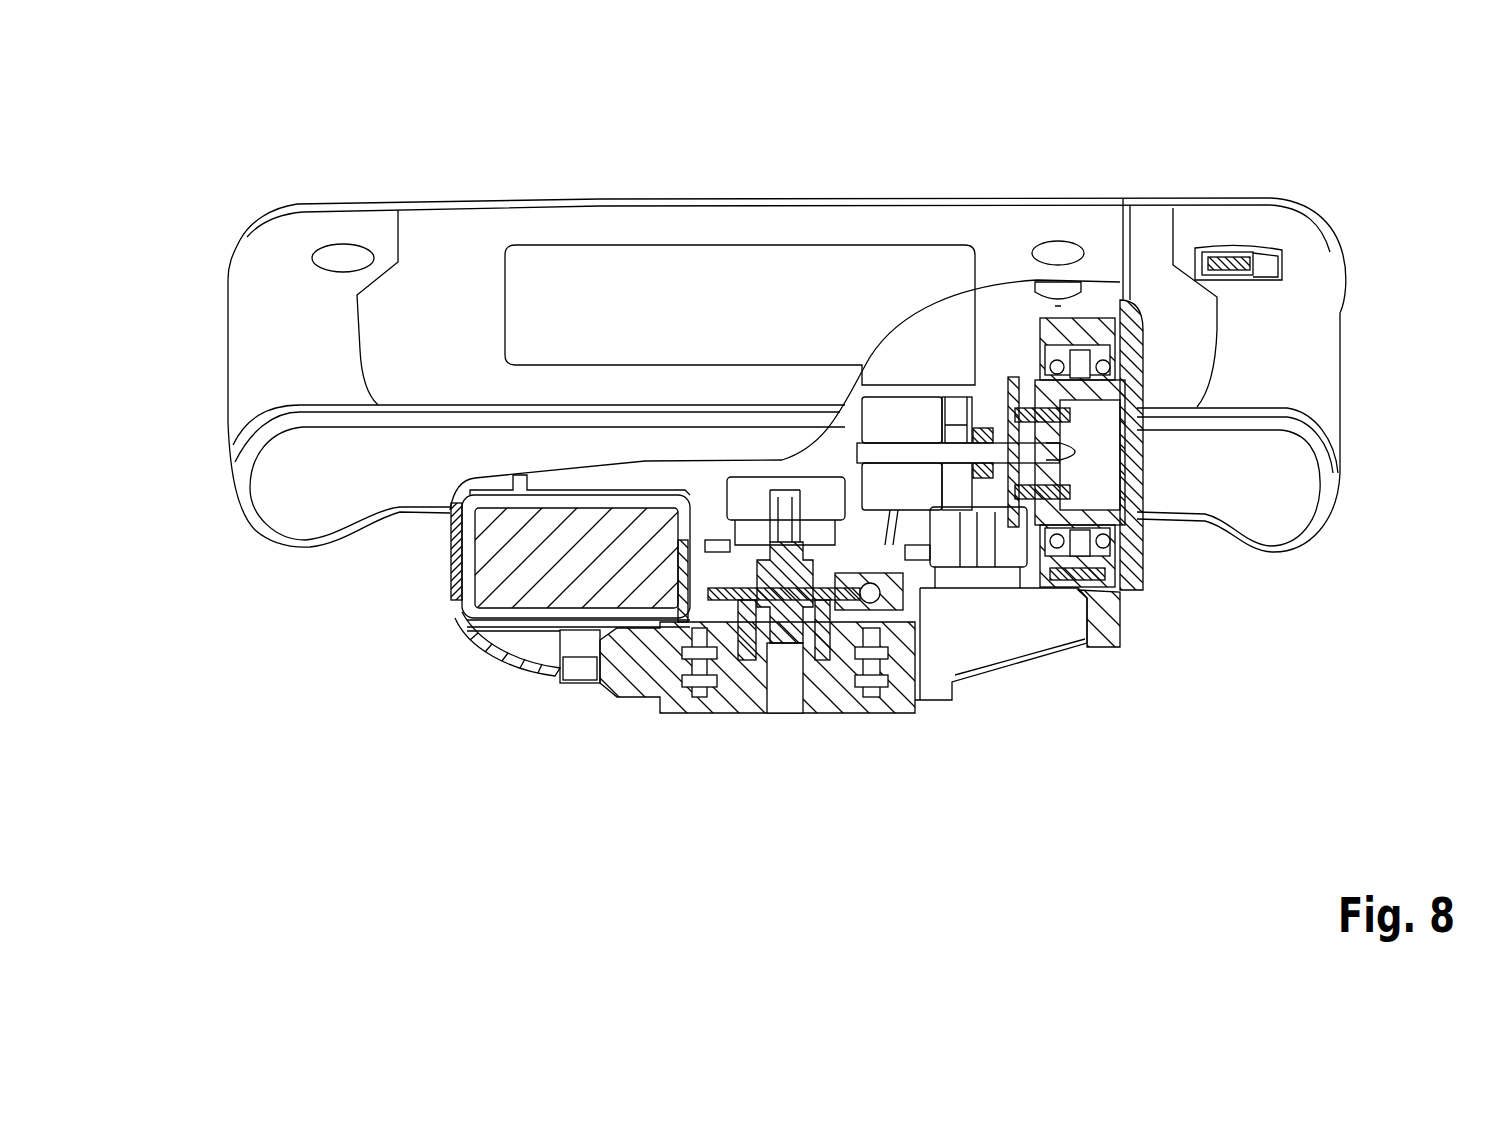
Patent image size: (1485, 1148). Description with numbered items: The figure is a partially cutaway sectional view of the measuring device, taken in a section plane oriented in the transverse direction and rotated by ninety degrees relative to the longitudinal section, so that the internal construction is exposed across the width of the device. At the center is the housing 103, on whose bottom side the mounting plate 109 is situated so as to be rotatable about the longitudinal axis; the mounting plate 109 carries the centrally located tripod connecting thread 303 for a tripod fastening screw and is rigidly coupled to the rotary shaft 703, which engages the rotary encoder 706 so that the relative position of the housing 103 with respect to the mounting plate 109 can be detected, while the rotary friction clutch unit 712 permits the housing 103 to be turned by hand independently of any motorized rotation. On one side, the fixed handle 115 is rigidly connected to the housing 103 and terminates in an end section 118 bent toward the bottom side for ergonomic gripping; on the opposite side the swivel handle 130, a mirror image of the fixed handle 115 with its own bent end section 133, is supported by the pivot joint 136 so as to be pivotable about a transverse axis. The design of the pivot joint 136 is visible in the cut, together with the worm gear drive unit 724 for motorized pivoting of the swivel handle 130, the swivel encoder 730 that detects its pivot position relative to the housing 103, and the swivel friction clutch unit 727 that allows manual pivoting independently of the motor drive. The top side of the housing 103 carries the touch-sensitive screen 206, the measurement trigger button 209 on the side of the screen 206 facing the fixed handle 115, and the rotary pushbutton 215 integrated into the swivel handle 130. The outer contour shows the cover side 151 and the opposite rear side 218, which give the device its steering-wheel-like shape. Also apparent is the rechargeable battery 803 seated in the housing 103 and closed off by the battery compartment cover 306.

The housing 103 is at (1105, 612).
The mounting plate 109 is at (718, 687).
The fixed handle 115 is at (211, 388).
The end section 118 is at (248, 338).
The swivel handle 130 is at (1352, 346).
The bent end section 133 is at (1322, 379).
The pivot joint 136 is at (1161, 536).
The cover side 151 is at (455, 190).
The screen 206 is at (633, 298).
The measurement trigger button 209 is at (343, 258).
The rotary pushbutton 215 is at (1226, 272).
The rear side 218 is at (419, 489).
The tripod connecting thread 303 is at (783, 692).
The cover 306 is at (490, 655).
The rotary shaft 703 is at (786, 607).
The rotary encoder 706 is at (746, 495).
The rotary friction clutch unit 712 is at (726, 573).
The worm gear drive unit 724 is at (991, 548).
The swivel friction clutch unit 727 is at (978, 405).
The swivel encoder 730 is at (907, 415).
The rechargeable battery 803 is at (490, 588).